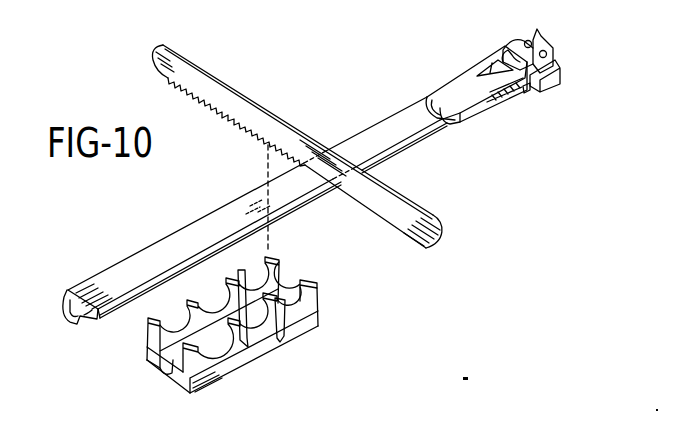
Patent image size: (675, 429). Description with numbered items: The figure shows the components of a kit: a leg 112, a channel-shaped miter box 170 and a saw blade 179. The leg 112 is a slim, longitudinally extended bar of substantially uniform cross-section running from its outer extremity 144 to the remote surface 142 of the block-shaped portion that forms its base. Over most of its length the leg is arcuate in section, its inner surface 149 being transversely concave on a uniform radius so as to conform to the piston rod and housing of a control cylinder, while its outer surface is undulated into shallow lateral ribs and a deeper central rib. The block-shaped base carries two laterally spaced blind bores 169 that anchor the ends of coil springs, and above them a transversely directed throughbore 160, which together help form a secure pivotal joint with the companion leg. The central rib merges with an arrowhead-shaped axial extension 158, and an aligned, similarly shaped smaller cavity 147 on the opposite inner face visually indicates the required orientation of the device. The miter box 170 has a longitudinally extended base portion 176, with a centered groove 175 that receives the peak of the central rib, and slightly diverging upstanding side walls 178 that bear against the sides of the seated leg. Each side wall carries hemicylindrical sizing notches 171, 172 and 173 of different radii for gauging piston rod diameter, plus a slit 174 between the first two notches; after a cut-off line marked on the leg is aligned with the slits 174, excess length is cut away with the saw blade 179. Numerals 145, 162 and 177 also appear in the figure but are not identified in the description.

The leg 112 is at (151, 248).
The remote surface 142 is at (560, 65).
The outer extremity 144 is at (68, 292).
The pin 145 is at (522, 92).
The cavity 147 is at (478, 68).
The inner surface 149 is at (219, 214).
The arrowhead shaped axial extension 158 is at (500, 100).
The throughbore 160 is at (521, 46).
The saddle 162 is at (512, 50).
The blind bores 169 is at (536, 32).
The miter box 170 is at (331, 320).
The notch 171 is at (297, 280).
The notch 172 is at (257, 327).
The notch 173 is at (218, 322).
The slit 174 is at (320, 302).
The groove 175 is at (150, 365).
The base portion 176 is at (168, 383).
The left wall 177 is at (143, 331).
The side walls 178 is at (257, 347).
The saw blade 179 is at (277, 123).